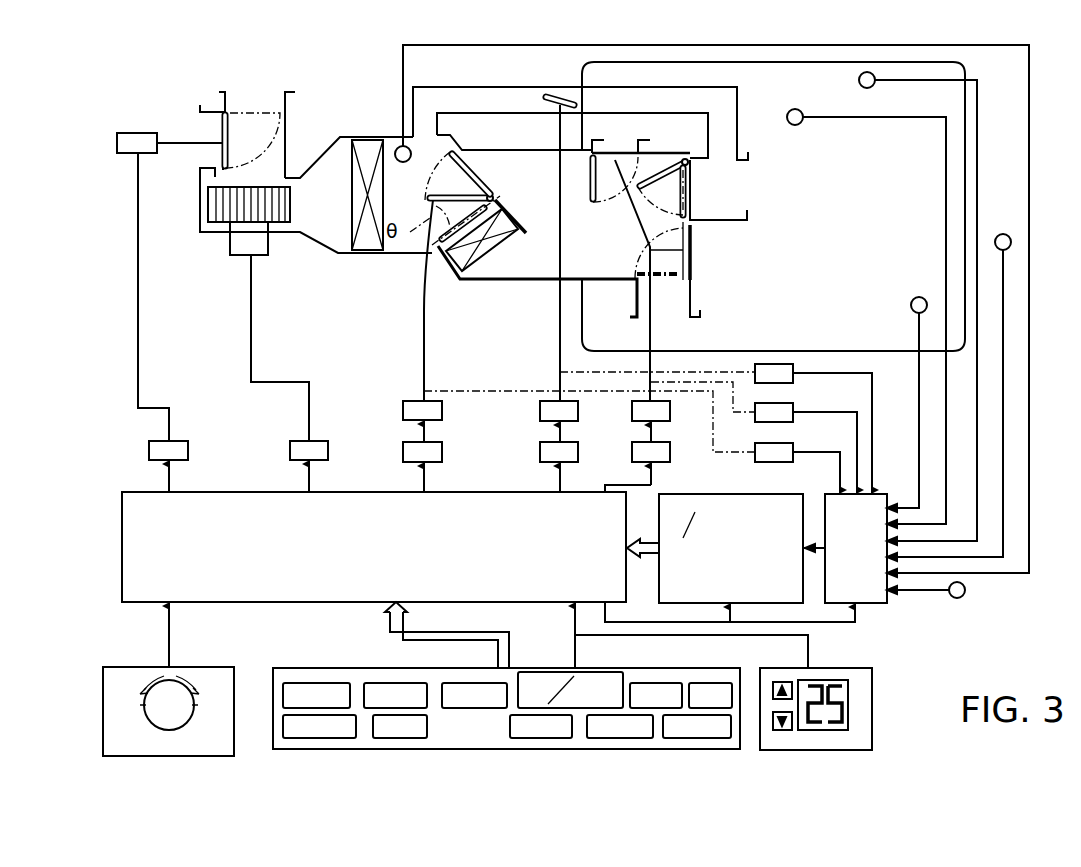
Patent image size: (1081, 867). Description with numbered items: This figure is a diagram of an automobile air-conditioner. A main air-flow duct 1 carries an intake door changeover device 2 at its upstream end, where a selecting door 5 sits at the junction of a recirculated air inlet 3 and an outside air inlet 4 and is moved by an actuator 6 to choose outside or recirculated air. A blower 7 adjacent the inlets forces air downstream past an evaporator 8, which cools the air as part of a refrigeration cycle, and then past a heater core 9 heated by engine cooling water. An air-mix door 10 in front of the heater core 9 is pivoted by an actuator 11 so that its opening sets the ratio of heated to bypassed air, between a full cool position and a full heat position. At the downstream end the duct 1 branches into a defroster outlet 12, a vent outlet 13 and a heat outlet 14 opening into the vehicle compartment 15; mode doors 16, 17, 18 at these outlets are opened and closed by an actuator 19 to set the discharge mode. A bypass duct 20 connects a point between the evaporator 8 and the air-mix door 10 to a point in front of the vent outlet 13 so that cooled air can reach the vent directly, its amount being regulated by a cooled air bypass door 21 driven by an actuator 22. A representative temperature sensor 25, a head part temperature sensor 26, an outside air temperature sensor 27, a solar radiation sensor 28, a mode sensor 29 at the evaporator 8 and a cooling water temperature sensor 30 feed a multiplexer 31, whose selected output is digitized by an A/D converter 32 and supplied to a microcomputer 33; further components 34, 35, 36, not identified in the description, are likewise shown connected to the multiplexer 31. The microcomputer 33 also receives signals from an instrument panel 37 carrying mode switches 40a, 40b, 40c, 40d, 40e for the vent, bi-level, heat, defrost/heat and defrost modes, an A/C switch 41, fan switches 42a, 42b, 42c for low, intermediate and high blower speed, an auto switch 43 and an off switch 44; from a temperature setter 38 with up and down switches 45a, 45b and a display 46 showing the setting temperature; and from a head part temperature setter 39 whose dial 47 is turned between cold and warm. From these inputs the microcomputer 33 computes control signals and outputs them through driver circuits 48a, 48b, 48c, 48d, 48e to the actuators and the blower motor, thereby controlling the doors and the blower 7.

The main air-flow duct 1 is at (322, 150).
The intake door changeover device 2 is at (270, 110).
The recirculated air inlet 3 is at (208, 157).
The outside air inlet 4 is at (232, 110).
The selecting door 5 is at (218, 128).
The actuator 6 is at (137, 133).
The blower 7 is at (200, 215).
The evaporator 8 is at (358, 142).
The heater core 9 is at (463, 272).
The air-mix door 10 is at (462, 198).
The actuator 11 is at (408, 400).
The defroster outlet 12 is at (627, 150).
The vent outlet 13 is at (735, 208).
The heat outlet 14 is at (692, 298).
The vehicle compartment 15 is at (965, 75).
The mode door 16 is at (600, 150).
The mode door 17 is at (692, 178).
The mode door 18 is at (693, 252).
The actuator 19 is at (630, 417).
The bypass duct 20 is at (488, 100).
The cooled air bypass door 21 is at (552, 96).
The actuator 22 is at (538, 418).
The representative temperature sensor 25 is at (913, 300).
The head part temperature sensor 26 is at (873, 86).
The outside air temperature sensor 27 is at (1002, 234).
The solar radiation sensor 28 is at (797, 109).
The mode sensor 29 is at (400, 146).
The cooling water temperature sensor 30 is at (960, 598).
The multiplexer 31 is at (878, 604).
The A/D converter 32 is at (736, 493).
The microcomputer 33 is at (120, 564).
The door position sensor 34 is at (795, 380).
The door position sensor 35 is at (795, 418).
The door position sensor 36 is at (794, 456).
The instrument panel 37 is at (506, 692).
The temperature setter 38 is at (746, 708).
The head part temperature setter 39 is at (181, 694).
The mode switch 40a is at (322, 683).
The mode switch 40b is at (417, 683).
The mode switch 40c is at (490, 683).
The mode switch 40d is at (580, 673).
The mode switch 40e is at (658, 683).
The A/C switch 41 is at (706, 683).
The fan switch 42a is at (528, 738).
The fan switch 42b is at (610, 738).
The fan switch 42c is at (724, 749).
The auto switch 43 is at (314, 738).
The off switch 44 is at (406, 738).
The up switch 45a is at (782, 682).
The down switch 45b is at (783, 730).
The display 46 is at (838, 730).
The dial 47 is at (192, 688).
The driver circuit 48a is at (188, 458).
The driver circuit 48b is at (438, 462).
The driver circuit 48c is at (632, 460).
The driver circuit 48d is at (540, 462).
The driver circuit 48e is at (328, 458).